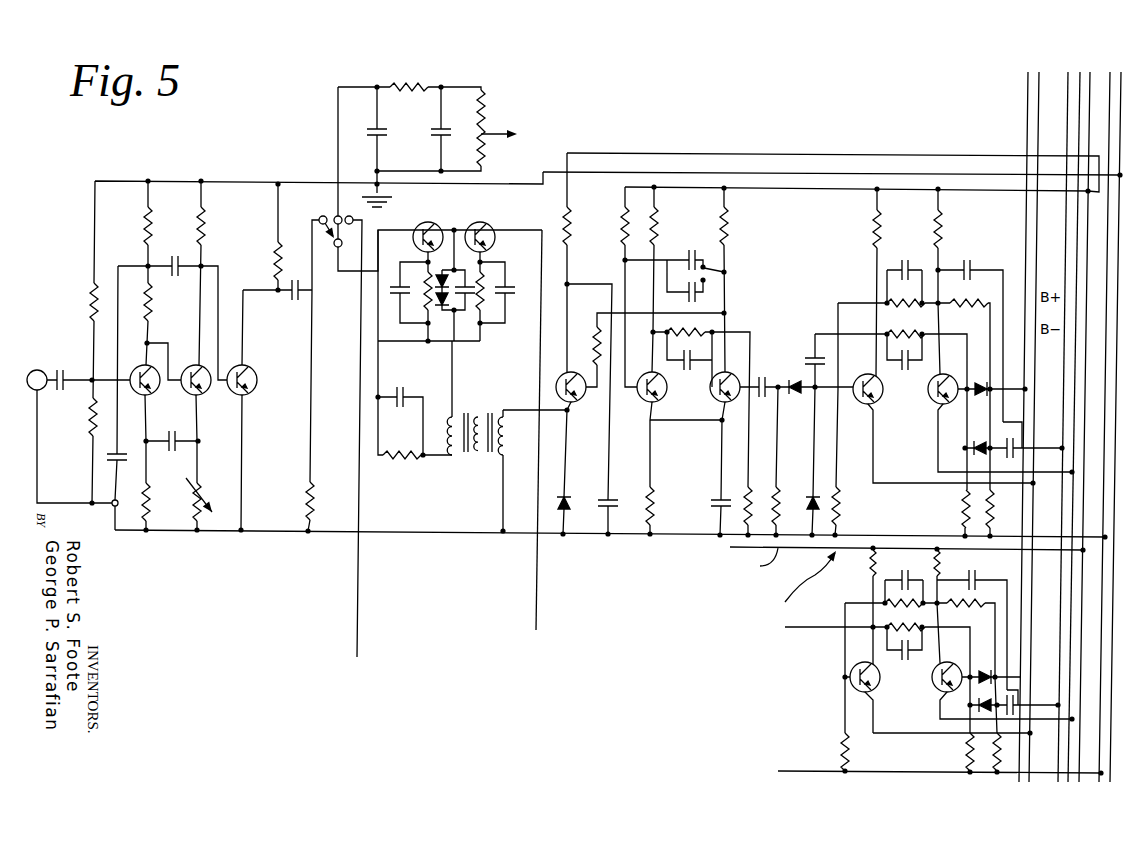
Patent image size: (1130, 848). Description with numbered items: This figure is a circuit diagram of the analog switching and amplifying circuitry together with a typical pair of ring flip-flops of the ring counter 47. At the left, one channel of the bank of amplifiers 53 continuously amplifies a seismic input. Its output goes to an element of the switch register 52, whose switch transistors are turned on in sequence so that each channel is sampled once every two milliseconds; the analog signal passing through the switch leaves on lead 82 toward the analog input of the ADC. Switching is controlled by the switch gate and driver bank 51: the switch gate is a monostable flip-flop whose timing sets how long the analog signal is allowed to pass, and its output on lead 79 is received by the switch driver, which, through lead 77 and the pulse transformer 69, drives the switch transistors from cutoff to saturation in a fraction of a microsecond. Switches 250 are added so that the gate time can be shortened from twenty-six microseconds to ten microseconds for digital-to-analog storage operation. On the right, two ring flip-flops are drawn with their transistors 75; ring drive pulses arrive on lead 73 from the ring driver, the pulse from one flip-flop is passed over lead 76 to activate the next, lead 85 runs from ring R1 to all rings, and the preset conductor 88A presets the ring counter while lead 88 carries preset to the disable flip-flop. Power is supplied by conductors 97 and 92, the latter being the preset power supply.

The bank of amplifiers 53 is at (285, 343).
The switch register 52 is at (423, 383).
The switch gate and driver bank 51 is at (703, 377).
The pulse transformer 69 is at (507, 437).
The lead from switch driver to switch 77 is at (525, 410).
The lead from switch to ADC analog input 82 is at (536, 597).
The power supply lead 97 is at (724, 152).
The power supply (preset) lead 92 is at (805, 171).
The switches 250 is at (718, 262).
The lead from switch gate to switch driver 79 is at (727, 311).
The lead from ring flip-flop to next ring flip-flop 76 is at (989, 270).
The ring counter transistor 75 is at (858, 405).
The ring driver output lead 73 is at (888, 483).
The lead from ring R1 to all rings 85 is at (1080, 233).
The preset lead to ring counter 88A is at (1066, 70).
The preset lead to disable flip-flop 88 is at (1049, 710).
The ring counter 47 is at (883, 427).